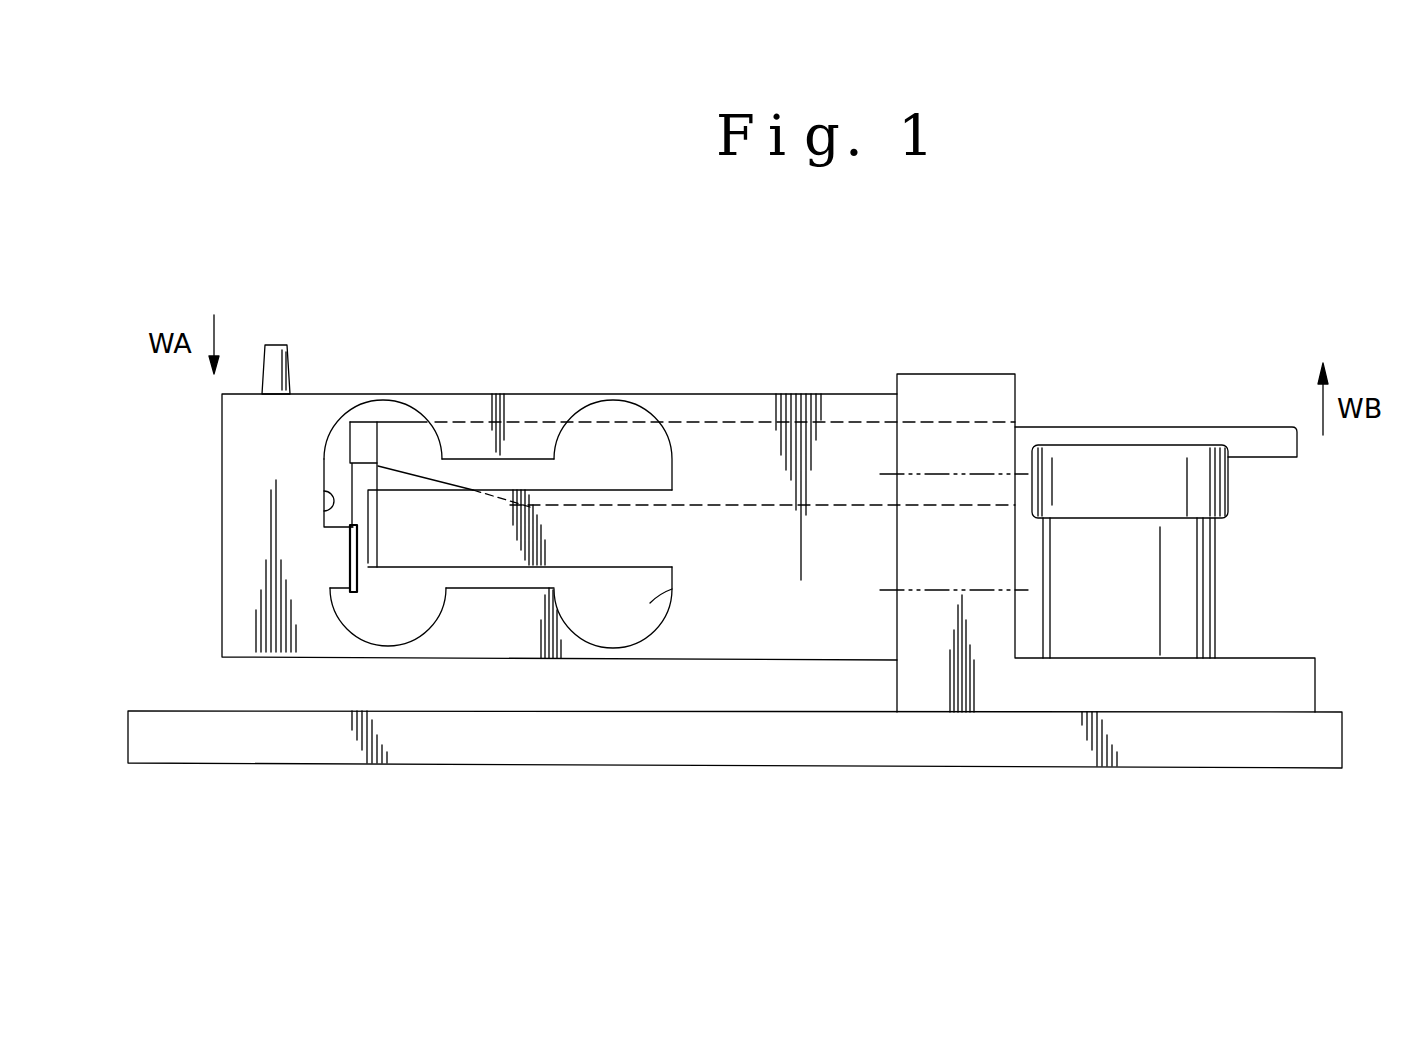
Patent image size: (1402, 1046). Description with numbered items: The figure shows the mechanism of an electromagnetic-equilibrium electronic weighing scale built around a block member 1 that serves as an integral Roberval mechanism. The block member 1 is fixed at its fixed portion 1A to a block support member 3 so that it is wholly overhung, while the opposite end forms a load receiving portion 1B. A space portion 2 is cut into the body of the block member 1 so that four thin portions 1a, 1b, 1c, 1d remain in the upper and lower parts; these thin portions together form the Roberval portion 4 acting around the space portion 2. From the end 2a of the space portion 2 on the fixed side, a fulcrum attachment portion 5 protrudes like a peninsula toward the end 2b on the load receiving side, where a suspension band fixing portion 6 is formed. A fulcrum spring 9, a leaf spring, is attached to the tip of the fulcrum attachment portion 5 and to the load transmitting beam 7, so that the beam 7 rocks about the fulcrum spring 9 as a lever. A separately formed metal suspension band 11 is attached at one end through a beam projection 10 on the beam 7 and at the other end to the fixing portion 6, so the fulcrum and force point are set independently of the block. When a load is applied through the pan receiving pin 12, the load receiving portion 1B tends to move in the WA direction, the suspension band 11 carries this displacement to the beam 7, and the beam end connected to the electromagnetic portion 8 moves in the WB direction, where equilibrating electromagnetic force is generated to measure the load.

The block member 1 is at (470, 333).
The fixed portion 1A is at (797, 394).
The load receiving portion 1B is at (240, 583).
The thin portion 1a is at (382, 392).
The thin portion 1b is at (613, 392).
The thin portion 1c is at (388, 660).
The thin portion 1d is at (612, 660).
The space portion 2 is at (620, 607).
The end on the fixed portion side 2a is at (668, 592).
The end on the load receiving portion side 2b is at (324, 492).
The block support member 3 is at (960, 374).
The Roberval portion 4 is at (517, 392).
The fulcrum attachment portion 5 is at (478, 533).
The suspension band fixing portion 6 is at (347, 557).
The load transmitting beam 7 is at (617, 423).
The electromagnetic portion 8 is at (1187, 580).
The fulcrum spring 9 is at (378, 468).
The beam projection 10 is at (365, 437).
The suspension band 11 is at (348, 479).
The pan receiving pin 12 is at (272, 343).